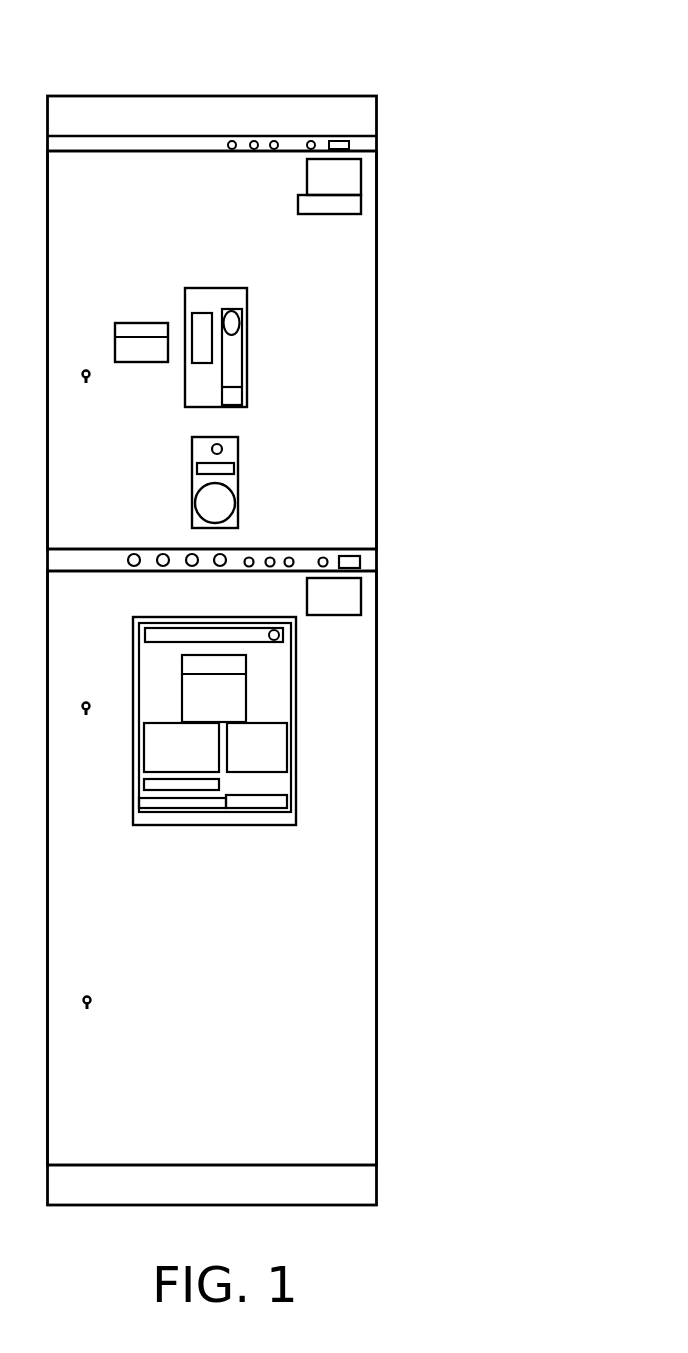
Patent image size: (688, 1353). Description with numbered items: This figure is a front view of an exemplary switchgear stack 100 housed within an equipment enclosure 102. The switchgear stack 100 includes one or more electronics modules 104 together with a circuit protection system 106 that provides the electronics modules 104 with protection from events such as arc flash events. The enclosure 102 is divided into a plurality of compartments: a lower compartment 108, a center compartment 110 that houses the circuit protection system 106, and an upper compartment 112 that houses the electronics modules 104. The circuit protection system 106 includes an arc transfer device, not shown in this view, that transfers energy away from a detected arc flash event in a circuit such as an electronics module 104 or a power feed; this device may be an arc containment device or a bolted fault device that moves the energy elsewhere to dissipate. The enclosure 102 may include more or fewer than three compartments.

The switchgear stack 100 is at (531, 63).
The equipment enclosure 102 is at (380, 352).
The electronics modules 104 is at (185, 303).
The circuit protection system 106 is at (393, 712).
The lower compartment 108 is at (370, 1023).
The center compartment 110 is at (355, 622).
The upper compartment 112 is at (367, 445).